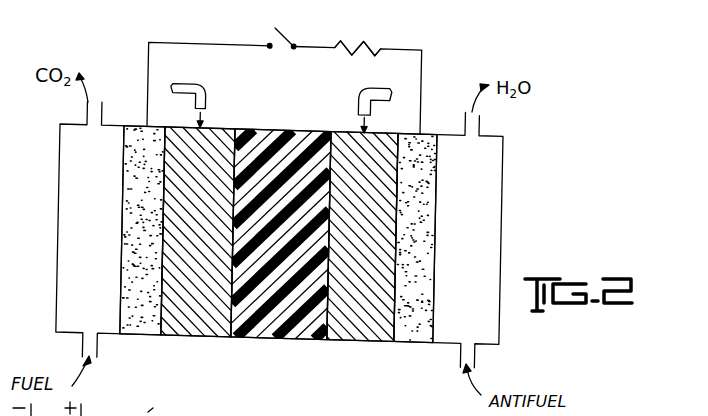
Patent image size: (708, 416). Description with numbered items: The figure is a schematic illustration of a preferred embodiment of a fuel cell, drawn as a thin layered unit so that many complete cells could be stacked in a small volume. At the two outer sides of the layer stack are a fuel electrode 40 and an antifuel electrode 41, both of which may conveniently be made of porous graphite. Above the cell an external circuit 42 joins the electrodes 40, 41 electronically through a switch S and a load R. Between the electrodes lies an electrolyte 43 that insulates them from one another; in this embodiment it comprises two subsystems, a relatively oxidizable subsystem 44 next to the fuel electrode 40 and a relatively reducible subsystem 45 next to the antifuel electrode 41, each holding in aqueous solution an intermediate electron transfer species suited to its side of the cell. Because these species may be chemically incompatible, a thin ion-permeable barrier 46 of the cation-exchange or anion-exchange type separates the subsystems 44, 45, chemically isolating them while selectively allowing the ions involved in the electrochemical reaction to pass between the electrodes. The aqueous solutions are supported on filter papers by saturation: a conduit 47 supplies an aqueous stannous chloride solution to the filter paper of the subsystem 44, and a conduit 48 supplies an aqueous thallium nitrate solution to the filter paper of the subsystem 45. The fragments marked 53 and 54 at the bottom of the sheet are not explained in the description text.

The fuel electrode 40 is at (142, 230).
The antifuel electrode 41 is at (415, 237).
The external circuit 42 is at (284, 79).
The electrolyte 43 is at (281, 234).
The relatively oxidizable subsystem 44 is at (198, 232).
The relatively reducible subsystem 45 is at (362, 237).
The ion-permeable barrier 46 is at (279, 234).
The conduit 47 is at (188, 106).
The conduit 48 is at (375, 111).
The terminal 53 is at (92, 415).
The terminal 54 is at (166, 405).
The switch S is at (281, 38).
The load R is at (358, 48).